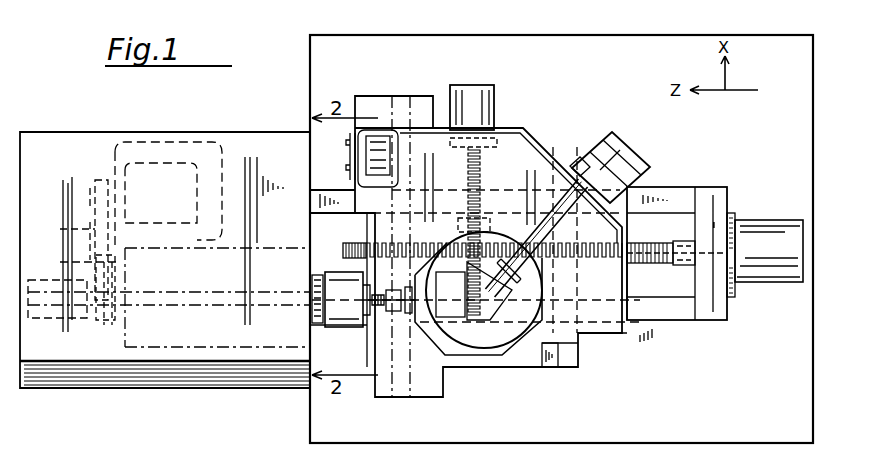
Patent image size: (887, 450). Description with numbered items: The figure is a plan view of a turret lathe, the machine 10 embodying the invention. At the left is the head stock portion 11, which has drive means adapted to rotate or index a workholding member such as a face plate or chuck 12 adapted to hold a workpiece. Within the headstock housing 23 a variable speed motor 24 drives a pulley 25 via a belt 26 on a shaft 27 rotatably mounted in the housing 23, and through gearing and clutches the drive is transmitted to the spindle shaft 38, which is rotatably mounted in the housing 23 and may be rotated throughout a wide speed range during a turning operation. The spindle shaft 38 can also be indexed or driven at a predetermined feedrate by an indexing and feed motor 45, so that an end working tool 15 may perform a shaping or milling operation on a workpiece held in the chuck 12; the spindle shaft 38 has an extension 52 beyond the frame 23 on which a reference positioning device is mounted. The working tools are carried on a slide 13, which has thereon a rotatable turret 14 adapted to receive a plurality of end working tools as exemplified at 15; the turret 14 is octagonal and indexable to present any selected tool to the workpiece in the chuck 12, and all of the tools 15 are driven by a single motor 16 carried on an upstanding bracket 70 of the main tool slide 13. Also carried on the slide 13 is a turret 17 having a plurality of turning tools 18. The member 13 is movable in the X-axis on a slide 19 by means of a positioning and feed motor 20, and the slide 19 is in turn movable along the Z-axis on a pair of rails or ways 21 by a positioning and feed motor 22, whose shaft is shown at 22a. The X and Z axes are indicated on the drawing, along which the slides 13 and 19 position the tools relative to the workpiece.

The machine 10 is at (412, 33).
The head stock portion 11 is at (226, 127).
The chuck 12 is at (337, 302).
The slide 13 is at (608, 326).
The rotatable turret 14 is at (493, 356).
The end working tools 15 is at (384, 302).
The motor 16 is at (607, 150).
The turret 17 is at (352, 146).
The turning tools 18 is at (347, 180).
The slide 19 is at (531, 358).
The positioning and feed motor 20 is at (480, 108).
The rails or ways 21 is at (635, 308).
The positioning and feed motor 22 is at (763, 233).
The actuator shaft 22a is at (661, 246).
The headstock housing 23 is at (176, 347).
The variable speed motor 24 is at (143, 141).
The pulley 25 is at (68, 232).
The belt 26 is at (96, 206).
The shaft 27 is at (70, 262).
The spindle shaft 38 is at (191, 293).
The indexing and feed motor 45 is at (198, 175).
The extension 52 is at (107, 312).
The upstanding bracket 70 is at (562, 156).